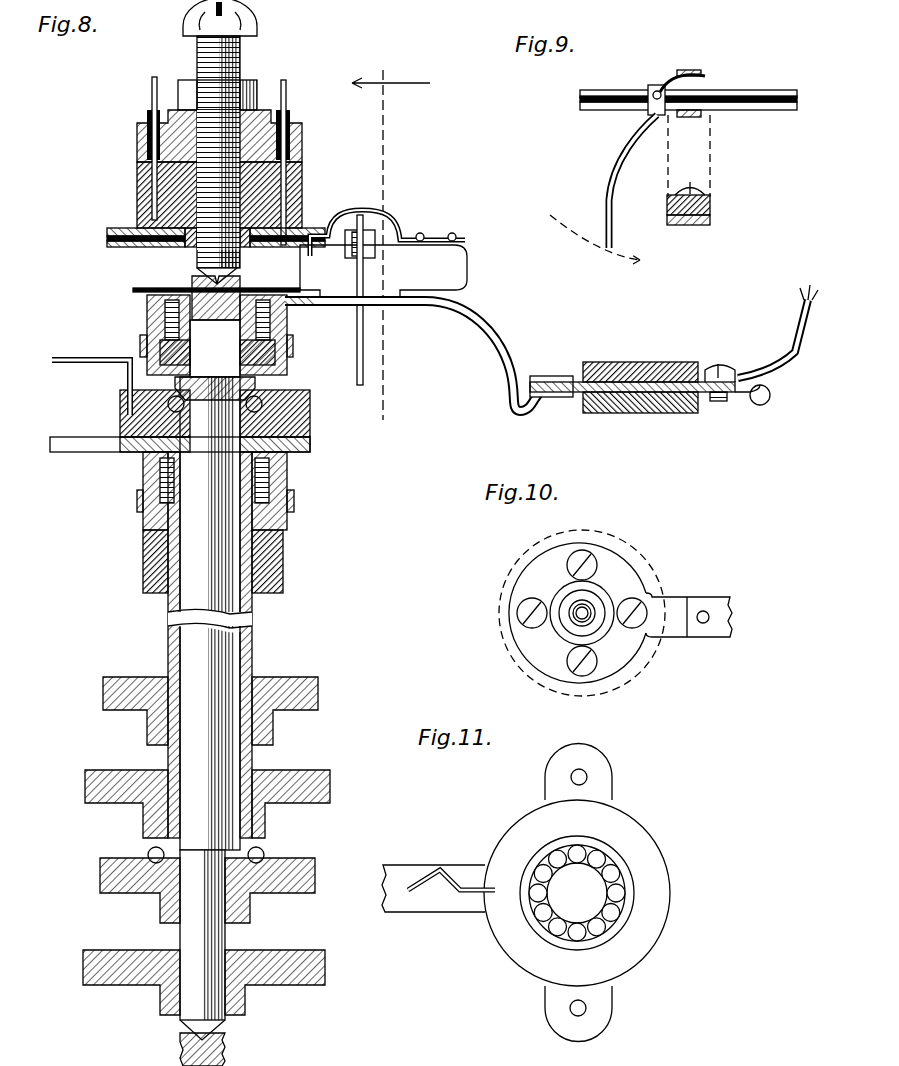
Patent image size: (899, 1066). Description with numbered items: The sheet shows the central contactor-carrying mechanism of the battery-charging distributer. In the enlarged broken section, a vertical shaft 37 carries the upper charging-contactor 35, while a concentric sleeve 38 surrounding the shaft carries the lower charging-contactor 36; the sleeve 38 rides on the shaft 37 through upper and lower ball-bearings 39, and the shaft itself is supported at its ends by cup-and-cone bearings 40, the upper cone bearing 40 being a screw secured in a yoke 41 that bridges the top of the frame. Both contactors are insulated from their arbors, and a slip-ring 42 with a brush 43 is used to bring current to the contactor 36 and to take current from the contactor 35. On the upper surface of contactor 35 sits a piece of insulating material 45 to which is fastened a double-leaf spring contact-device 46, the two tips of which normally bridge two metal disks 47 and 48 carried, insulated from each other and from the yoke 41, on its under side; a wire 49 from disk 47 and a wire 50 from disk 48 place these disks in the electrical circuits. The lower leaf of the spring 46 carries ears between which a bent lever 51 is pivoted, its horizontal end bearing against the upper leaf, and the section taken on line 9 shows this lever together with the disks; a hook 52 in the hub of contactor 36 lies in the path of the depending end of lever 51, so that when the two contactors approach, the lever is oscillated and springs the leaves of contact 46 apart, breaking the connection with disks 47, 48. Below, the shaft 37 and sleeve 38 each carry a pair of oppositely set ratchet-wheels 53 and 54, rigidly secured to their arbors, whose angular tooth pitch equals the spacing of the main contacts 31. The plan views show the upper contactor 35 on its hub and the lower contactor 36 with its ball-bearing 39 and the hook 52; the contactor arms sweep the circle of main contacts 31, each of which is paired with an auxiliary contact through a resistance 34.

In FIG. 8, the section line 9 is at (391, 232).
In FIG. 8, the main contact 31 is at (560, 380).
In FIG. 8, the resistance 34 is at (765, 404).
In FIG. 8, the upper charging-contactor 35 is at (500, 322).
In FIG. 9, the upper charging-contactor 35 is at (710, 220).
In FIG. 10, the upper charging-contactor 35 is at (678, 596).
In FIG. 8, the lower charging-contactor 36 is at (80, 452).
In FIG. 11, the lower charging-contactor 36 is at (440, 905).
In FIG. 8, the shaft 37 is at (192, 283).
In FIG. 8, the sleeve 38 is at (168, 650).
In FIG. 8, the ball-bearing 39 is at (262, 402).
In FIG. 11, the ball-bearing 39 is at (612, 868).
In FIG. 8, the cup-and-cone bearing 40 is at (228, 283).
In FIG. 8, the yoke 41 is at (305, 150).
In FIG. 8, the slip-ring 42 is at (147, 312).
In FIG. 8, the brush 43 is at (140, 346).
In FIG. 8, the insulating material 45 is at (455, 264).
In FIG. 9, the insulating material 45 is at (710, 204).
In FIG. 8, the double-leaf spring contact-device 46 is at (400, 230).
In FIG. 9, the double-leaf spring contact-device 46 is at (705, 72).
In FIG. 8, the metal disk 47 is at (108, 231).
In FIG. 9, the metal disk 47 is at (800, 80).
In FIG. 8, the metal disk 48 is at (108, 244).
In FIG. 9, the metal disk 48 is at (797, 108).
In FIG. 8, the wire 49 is at (150, 88).
In FIG. 8, the wire 50 is at (287, 86).
In FIG. 8, the bent lever 51 is at (366, 322).
In FIG. 9, the bent lever 51 is at (609, 164).
In FIG. 8, the hook 52 is at (97, 364).
In FIG. 11, the hook 52 is at (432, 868).
In FIG. 8, the ratchet-wheel 53 is at (103, 692).
In FIG. 8, the ratchet-wheel 54 is at (87, 785).